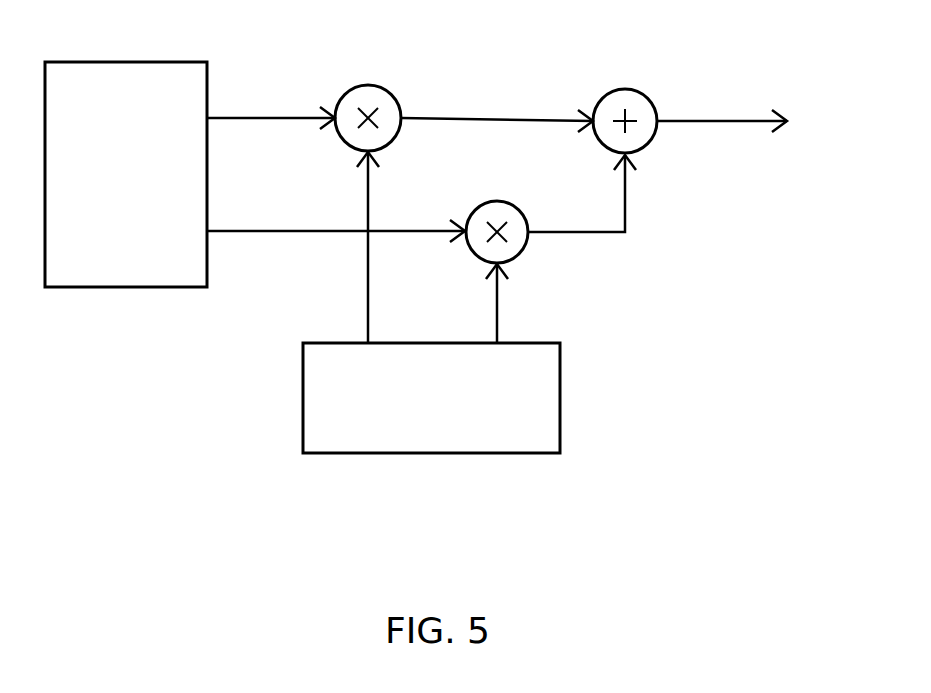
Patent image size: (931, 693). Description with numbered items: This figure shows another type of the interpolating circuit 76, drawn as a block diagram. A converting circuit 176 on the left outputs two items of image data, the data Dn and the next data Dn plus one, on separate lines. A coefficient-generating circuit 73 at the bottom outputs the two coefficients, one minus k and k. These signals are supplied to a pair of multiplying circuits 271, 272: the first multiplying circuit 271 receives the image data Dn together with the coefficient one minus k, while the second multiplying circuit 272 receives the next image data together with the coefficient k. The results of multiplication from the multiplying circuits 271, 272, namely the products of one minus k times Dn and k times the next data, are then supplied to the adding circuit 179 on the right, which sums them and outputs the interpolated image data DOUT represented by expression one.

The interpolating circuit 76 is at (369, 44).
The converting circuit 176 is at (110, 287).
The multiplying circuit 271 is at (394, 142).
The multiplying circuit 272 is at (493, 201).
The adding circuit 179 is at (625, 89).
The coefficient-generating circuit 73 is at (400, 453).